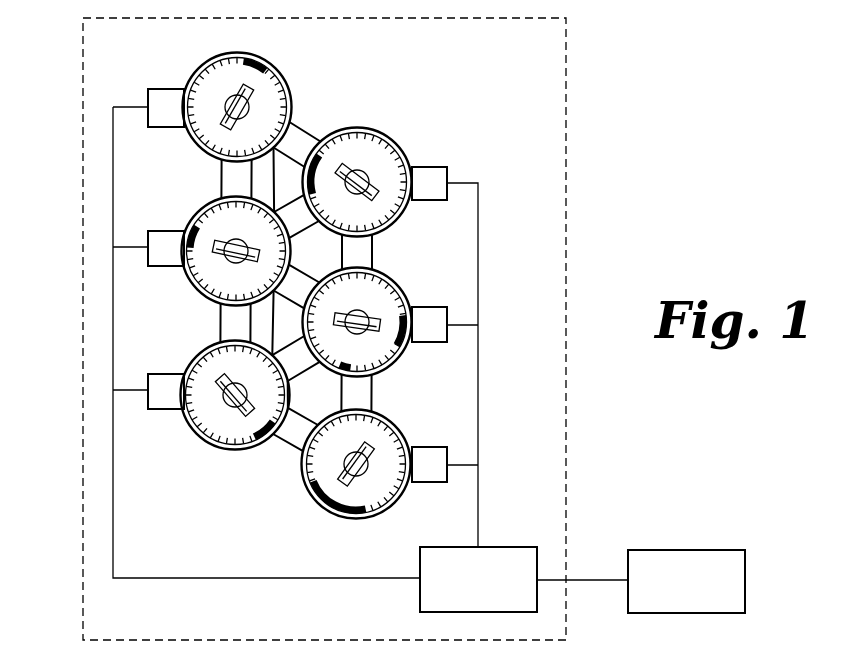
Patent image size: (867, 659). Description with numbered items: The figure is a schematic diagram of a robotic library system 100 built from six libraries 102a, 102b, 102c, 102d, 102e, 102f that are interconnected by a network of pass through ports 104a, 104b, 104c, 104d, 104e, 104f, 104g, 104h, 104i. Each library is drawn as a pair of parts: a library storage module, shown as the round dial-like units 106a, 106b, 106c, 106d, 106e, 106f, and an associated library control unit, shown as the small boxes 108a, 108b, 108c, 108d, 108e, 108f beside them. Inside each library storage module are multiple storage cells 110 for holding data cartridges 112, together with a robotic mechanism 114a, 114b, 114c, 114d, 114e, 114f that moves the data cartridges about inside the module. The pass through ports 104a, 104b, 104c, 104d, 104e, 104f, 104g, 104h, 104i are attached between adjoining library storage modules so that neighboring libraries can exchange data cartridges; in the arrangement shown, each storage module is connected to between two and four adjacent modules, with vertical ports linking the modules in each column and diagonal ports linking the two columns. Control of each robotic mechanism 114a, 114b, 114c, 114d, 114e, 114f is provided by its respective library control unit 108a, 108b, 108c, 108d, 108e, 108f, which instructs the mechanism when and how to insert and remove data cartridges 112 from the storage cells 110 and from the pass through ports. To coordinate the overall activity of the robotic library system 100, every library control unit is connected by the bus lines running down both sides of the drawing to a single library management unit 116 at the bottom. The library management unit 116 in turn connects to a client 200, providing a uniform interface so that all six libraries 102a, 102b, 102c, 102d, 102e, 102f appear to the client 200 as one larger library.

The robotic library system 100 is at (566, 113).
The library 102a is at (146, 80).
The library 102b is at (146, 224).
The library 102c is at (146, 367).
The library 102d is at (447, 157).
The library 102e is at (447, 297).
The library 102f is at (447, 437).
The pass through port 104a is at (235, 180).
The pass through port 104b is at (235, 320).
The pass through port 104c is at (288, 447).
The pass through port 104d is at (297, 140).
The pass through port 104e is at (352, 250).
The pass through port 104f is at (352, 393).
The pass through port 104g is at (287, 210).
The pass through port 104h is at (313, 278).
The pass through port 104i is at (287, 352).
The library storage module 106a is at (222, 92).
The library storage module 106b is at (222, 235).
The library storage module 106c is at (222, 378).
The library storage module 106d is at (400, 138).
The library storage module 106e is at (400, 278).
The library storage module 106f is at (405, 428).
The library control unit 108a is at (163, 107).
The library control unit 108b is at (163, 252).
The library control unit 108c is at (163, 395).
The library control unit 108d is at (433, 182).
The library control unit 108e is at (433, 322).
The library control unit 108f is at (433, 462).
The storage cells 110 is at (313, 502).
The data cartridges 112 is at (335, 512).
The robotic mechanism 114a is at (252, 90).
The robotic mechanism 114b is at (195, 258).
The robotic mechanism 114c is at (205, 432).
The robotic mechanism 114d is at (370, 160).
The robotic mechanism 114e is at (390, 326).
The robotic mechanism 114f is at (308, 482).
The library management unit 116 is at (478, 579).
The client 200 is at (686, 581).